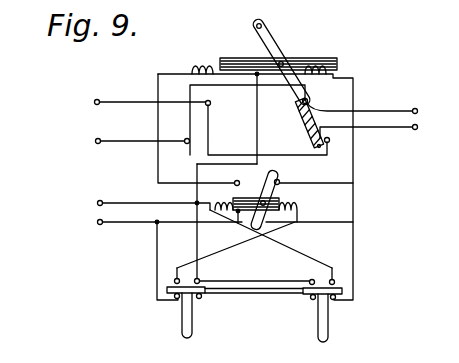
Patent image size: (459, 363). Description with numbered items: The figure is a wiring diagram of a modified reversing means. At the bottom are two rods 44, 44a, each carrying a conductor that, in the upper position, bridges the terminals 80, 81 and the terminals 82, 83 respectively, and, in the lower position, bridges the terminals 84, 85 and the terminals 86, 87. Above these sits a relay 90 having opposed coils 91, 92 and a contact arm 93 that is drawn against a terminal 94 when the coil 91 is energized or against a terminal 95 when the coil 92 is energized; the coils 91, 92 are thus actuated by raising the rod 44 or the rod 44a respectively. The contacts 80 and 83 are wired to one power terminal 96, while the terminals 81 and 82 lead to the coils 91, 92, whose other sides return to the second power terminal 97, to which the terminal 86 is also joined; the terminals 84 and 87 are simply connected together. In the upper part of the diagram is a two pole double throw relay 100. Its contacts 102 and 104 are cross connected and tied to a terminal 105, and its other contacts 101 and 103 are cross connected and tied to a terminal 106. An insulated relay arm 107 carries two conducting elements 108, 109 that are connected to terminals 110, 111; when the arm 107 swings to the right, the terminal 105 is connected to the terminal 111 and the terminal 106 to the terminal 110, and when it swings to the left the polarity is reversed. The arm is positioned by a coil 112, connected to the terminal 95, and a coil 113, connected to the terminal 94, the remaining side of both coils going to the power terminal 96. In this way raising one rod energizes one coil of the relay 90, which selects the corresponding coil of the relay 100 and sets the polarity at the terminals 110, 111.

The two pole double throw relay 100 is at (252, 43).
The insulated relay arm 107 is at (284, 53).
The coil 113 is at (201, 56).
The coil 112 is at (328, 58).
The terminal 105 is at (94, 102).
The contact 102 is at (226, 103).
The terminal 106 is at (96, 141).
The contact 101 is at (188, 144).
The contact 103 is at (308, 101).
The conducting element 108 is at (296, 106).
The contact 104 is at (330, 141).
The conducting element 109 is at (322, 149).
The terminal 110 is at (418, 111).
The terminal 111 is at (418, 127).
The terminal 94 is at (238, 180).
The contact arm 93 is at (274, 174).
The terminal 95 is at (280, 181).
The coil 91 is at (213, 201).
The coil 92 is at (299, 203).
The power terminal 96 is at (98, 203).
The power terminal 97 is at (98, 222).
The relay 90 is at (317, 245).
The terminal 82 is at (174, 280).
The terminal 83 is at (200, 281).
The terminal 80 is at (310, 280).
The terminal 81 is at (335, 281).
The terminal 86 is at (173, 296).
The terminal 87 is at (201, 299).
The terminal 84 is at (312, 300).
The terminal 85 is at (336, 299).
The rod 44a is at (181, 331).
The rod 44 is at (328, 335).